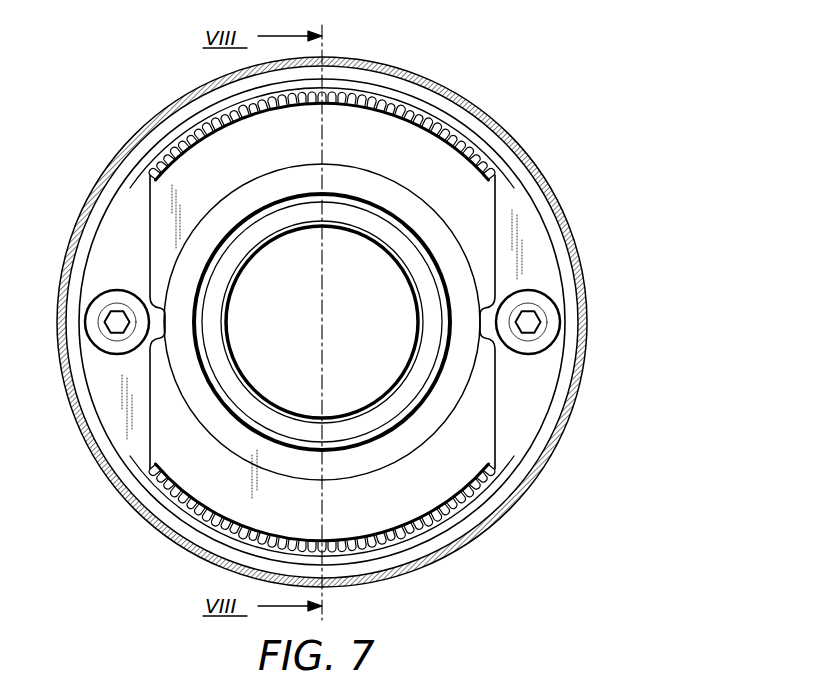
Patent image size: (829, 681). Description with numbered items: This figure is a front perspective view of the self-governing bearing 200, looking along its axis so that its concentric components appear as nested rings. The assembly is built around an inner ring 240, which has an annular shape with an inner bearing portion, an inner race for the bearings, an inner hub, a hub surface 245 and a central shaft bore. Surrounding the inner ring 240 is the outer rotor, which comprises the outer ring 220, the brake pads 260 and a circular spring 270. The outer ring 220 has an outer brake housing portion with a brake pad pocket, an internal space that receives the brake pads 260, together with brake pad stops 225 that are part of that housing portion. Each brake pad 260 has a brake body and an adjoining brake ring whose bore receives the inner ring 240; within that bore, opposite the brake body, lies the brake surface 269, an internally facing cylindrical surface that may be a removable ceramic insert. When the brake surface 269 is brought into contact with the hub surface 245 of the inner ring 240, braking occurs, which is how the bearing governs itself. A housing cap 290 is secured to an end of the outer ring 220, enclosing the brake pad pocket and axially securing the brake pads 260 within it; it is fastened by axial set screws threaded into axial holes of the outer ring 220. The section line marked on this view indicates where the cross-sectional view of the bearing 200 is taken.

The self-governing bearing 200 is at (594, 63).
The outer ring 220 is at (525, 382).
The brake pad stops 225 is at (485, 315).
The inner ring 240 is at (417, 378).
The hub surface 245 is at (260, 212).
The brake pads 260 is at (400, 138).
The brake surface 269 is at (362, 212).
The circular spring 270 is at (197, 133).
The housing cap 290 is at (553, 190).